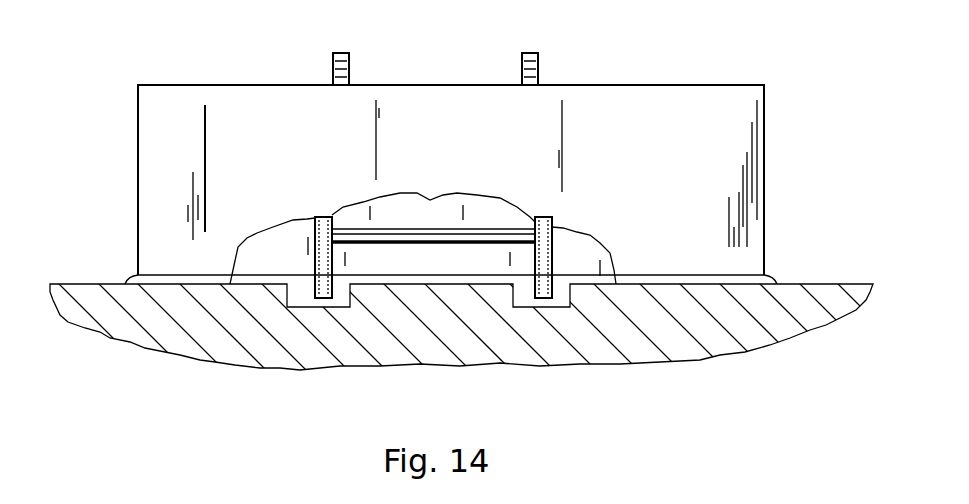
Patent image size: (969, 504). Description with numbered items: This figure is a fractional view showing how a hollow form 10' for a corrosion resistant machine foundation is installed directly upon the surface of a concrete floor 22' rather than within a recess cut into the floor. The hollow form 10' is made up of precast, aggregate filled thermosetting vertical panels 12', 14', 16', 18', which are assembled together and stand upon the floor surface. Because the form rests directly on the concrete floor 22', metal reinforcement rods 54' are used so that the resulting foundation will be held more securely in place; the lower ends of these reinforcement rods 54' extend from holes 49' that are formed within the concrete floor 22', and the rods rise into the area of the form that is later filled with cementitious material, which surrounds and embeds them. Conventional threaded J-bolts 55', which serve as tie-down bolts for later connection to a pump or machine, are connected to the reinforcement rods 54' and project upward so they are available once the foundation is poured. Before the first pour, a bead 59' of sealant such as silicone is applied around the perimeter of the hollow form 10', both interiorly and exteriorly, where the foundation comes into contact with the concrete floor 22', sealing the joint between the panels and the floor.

The hollow form 10' is at (489, 204).
The vertical panel 12' is at (451, 180).
The vertical panel 14' is at (423, 238).
The vertical panel 16' is at (103, 180).
The vertical panel 18' is at (798, 180).
The concrete floor 22' is at (489, 288).
The holes 49' is at (470, 311).
The metal reinforcement rods 54' is at (483, 234).
The threaded J-bolts 55' is at (397, 58).
The bead of sealant 59' is at (455, 321).